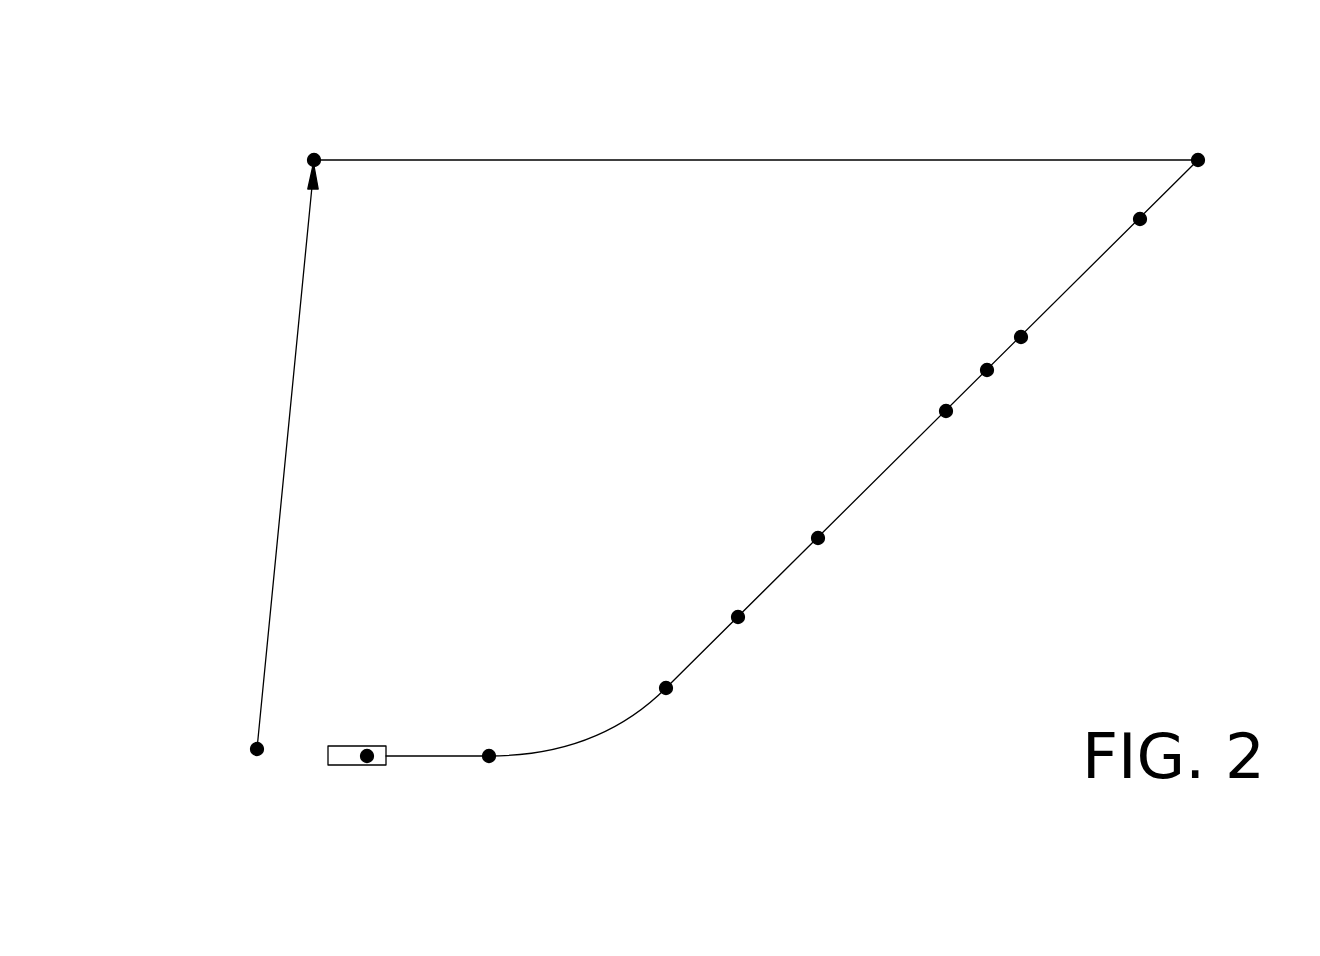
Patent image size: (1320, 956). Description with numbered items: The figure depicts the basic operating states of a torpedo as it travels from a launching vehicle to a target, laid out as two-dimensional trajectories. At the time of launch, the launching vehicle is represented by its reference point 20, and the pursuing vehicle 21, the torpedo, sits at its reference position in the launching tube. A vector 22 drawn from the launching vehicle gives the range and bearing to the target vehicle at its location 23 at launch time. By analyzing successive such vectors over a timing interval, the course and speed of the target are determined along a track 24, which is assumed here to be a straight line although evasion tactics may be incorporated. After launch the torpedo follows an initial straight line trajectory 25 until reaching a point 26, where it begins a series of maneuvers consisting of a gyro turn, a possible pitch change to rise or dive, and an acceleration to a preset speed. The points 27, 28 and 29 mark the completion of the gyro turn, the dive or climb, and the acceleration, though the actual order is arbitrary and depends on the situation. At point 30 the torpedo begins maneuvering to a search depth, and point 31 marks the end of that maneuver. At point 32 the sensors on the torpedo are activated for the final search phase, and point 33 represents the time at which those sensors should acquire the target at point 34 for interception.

The reference point of launching vehicle 20 is at (253, 752).
The pursuing vehicle 21 is at (357, 766).
The vector 22 is at (292, 399).
The target vehicle location 23 is at (314, 153).
The track 24 is at (478, 159).
The straight line trajectory 25 is at (430, 756).
The point 26 is at (489, 760).
The point 27 is at (673, 691).
The point 28 is at (745, 620).
The point 29 is at (825, 540).
The point 30 is at (953, 413).
The point 31 is at (985, 366).
The point 32 is at (1028, 340).
The point 33 is at (1149, 223).
The target point 34 is at (1198, 151).